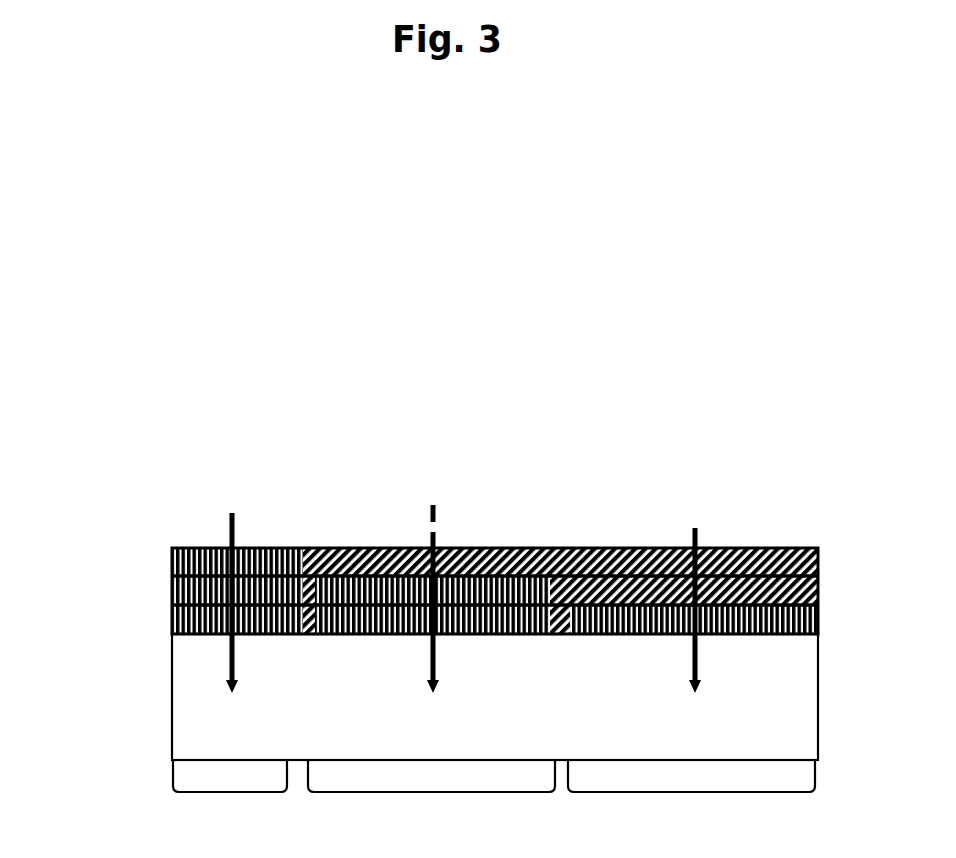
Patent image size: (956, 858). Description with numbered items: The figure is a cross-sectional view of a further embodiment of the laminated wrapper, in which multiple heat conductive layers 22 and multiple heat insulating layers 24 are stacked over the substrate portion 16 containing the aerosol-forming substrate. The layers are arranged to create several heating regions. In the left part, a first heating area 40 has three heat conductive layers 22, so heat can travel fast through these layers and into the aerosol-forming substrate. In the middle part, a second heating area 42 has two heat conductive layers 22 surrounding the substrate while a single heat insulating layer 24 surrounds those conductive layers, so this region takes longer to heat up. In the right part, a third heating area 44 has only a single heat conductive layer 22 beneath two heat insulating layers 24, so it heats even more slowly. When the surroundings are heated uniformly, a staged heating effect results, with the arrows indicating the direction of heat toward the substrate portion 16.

The substrate portion 16 is at (193, 722).
The heat conductive layer 22 is at (434, 577).
The heat insulating layer 24 is at (728, 558).
The first heating area 40 is at (230, 792).
The second heating area 42 is at (433, 792).
The third heating area 44 is at (692, 792).